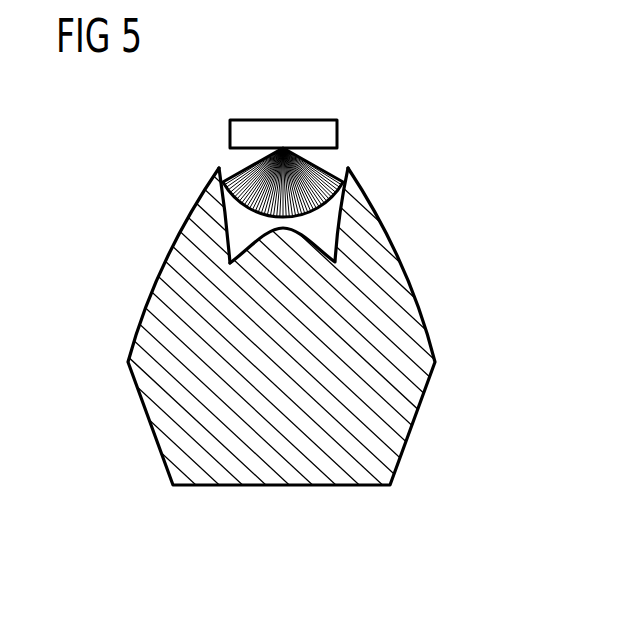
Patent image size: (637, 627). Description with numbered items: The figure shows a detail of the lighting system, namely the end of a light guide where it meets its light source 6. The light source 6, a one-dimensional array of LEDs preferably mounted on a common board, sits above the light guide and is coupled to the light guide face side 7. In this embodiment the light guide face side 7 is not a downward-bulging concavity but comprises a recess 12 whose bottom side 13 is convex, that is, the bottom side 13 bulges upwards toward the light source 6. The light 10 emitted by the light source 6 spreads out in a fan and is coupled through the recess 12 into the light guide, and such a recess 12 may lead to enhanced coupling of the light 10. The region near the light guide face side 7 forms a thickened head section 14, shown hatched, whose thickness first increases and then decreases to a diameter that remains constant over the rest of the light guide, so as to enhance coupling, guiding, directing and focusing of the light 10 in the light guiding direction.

The light source 6 is at (253, 131).
The light guide face side 7 is at (358, 136).
The light 10 is at (315, 173).
The recess 12 is at (325, 230).
The convex bottom side 13 is at (270, 234).
The thickened head section 14 is at (397, 308).